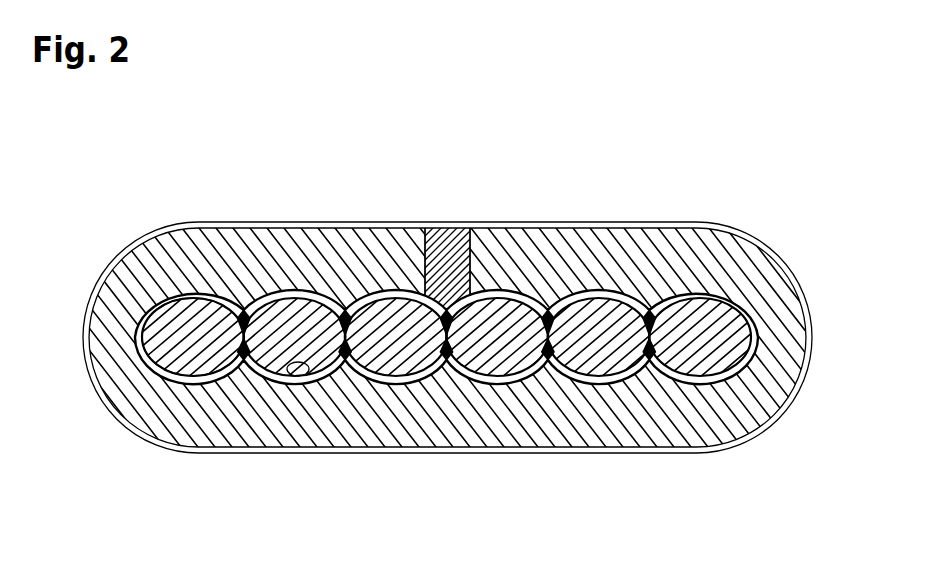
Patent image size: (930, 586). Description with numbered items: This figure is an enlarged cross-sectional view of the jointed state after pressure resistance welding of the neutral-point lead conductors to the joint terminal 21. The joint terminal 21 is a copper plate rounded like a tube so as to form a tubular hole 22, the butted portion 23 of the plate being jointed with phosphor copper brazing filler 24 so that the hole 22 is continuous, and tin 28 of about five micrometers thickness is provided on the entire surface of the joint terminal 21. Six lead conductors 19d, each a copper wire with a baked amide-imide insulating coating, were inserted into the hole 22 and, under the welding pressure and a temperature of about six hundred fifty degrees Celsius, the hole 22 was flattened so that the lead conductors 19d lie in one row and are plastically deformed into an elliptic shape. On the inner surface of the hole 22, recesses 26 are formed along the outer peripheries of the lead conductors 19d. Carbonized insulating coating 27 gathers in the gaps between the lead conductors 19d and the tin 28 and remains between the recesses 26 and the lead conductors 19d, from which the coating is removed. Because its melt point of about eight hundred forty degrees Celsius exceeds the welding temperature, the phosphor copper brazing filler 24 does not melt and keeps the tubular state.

The lead conductor 19d is at (292, 325).
The joint terminal 21 is at (646, 258).
The tubular hole 22 is at (238, 350).
The butted portion 23 is at (425, 258).
The phosphor copper brazing filler 24 is at (445, 247).
The recess 26 is at (310, 372).
The carbonized insulating coating 27 is at (552, 314).
The tin 28 is at (533, 373).